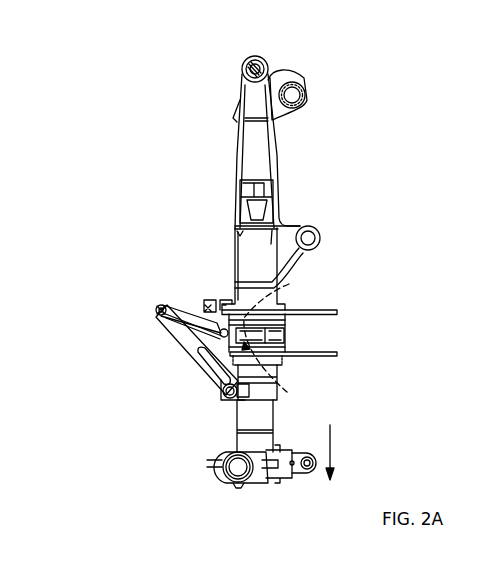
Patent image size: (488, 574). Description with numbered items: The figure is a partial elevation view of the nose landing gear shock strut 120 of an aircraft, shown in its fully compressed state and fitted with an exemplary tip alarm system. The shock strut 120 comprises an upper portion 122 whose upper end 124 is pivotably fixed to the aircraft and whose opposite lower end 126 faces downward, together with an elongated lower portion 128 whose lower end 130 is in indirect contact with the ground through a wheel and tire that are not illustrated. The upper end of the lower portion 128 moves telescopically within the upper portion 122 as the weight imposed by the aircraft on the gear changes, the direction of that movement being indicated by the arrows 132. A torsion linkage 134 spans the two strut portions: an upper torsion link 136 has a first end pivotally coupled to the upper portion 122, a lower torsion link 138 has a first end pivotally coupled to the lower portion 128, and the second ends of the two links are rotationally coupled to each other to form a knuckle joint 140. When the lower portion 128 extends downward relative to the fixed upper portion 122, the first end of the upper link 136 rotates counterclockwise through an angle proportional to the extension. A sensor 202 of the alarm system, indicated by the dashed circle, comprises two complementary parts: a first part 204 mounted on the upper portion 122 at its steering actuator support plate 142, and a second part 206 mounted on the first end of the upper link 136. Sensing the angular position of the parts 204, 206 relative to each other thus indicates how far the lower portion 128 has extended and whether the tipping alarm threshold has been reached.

The shock strut 120 is at (312, 203).
The upper portion 122 is at (243, 253).
The upper end 124 is at (272, 73).
The lower end 126 is at (285, 334).
The lower portion 128 is at (242, 417).
The lower end 130 is at (230, 483).
The arrows 132 is at (333, 443).
The torsion linkage 134 is at (148, 303).
The upper torsion link 136 is at (190, 364).
The lower torsion link 138 is at (181, 336).
The knuckle joint 140 is at (153, 317).
The steering actuator support plate 142 is at (300, 310).
The sensor 202 is at (291, 285).
The first sensor part 204 is at (208, 298).
The second sensor part 206 is at (243, 388).